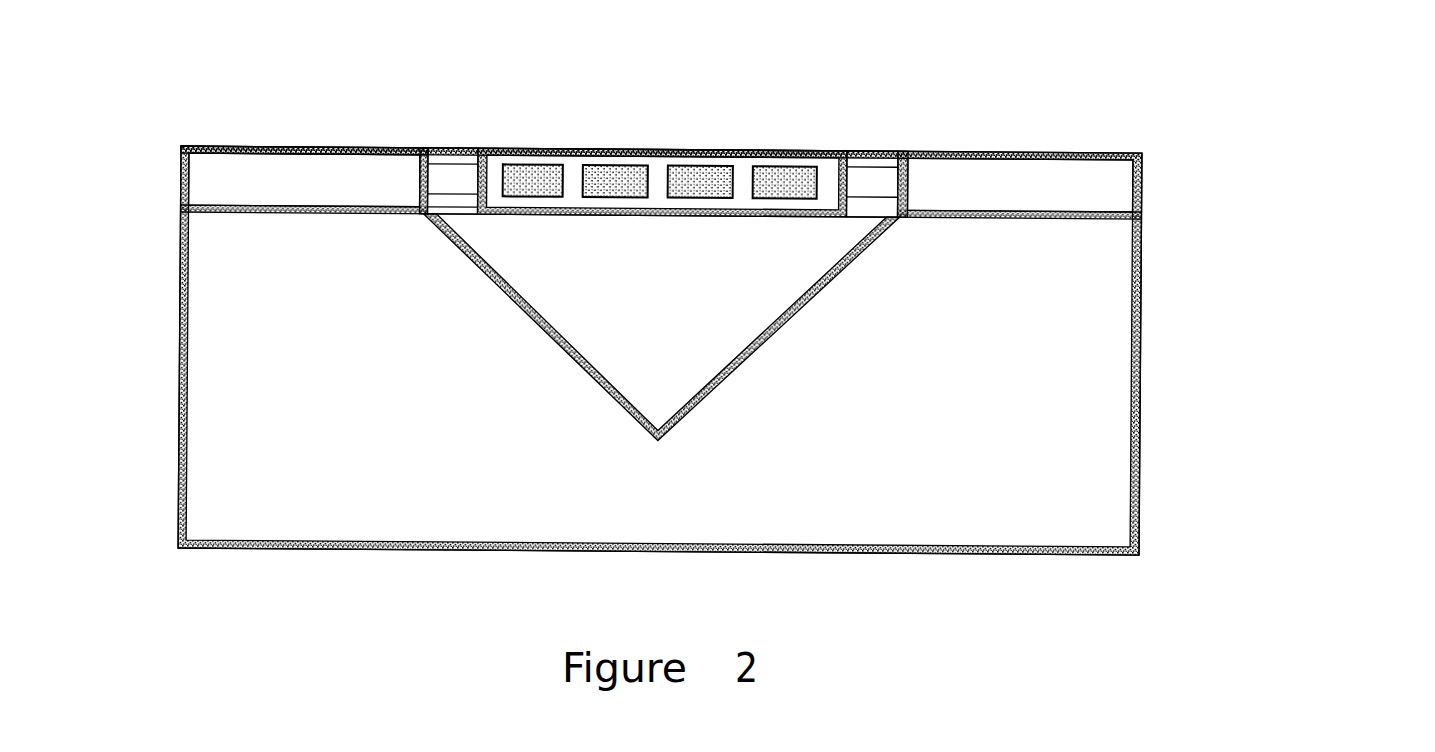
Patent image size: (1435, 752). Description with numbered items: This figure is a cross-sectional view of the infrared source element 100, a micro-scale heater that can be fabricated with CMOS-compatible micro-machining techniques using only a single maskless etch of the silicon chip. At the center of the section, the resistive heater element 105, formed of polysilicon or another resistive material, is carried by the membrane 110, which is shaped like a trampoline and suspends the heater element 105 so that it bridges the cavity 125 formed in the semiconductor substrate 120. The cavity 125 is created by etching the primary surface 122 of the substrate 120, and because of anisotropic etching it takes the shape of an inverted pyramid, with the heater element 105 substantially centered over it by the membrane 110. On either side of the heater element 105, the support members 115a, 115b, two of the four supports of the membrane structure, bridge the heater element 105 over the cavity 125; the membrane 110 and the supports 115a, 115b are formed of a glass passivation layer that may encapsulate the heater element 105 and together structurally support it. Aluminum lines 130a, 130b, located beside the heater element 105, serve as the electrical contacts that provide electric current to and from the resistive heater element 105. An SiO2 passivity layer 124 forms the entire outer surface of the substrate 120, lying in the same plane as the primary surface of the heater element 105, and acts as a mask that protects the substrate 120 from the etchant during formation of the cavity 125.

The infrared source element 100 is at (1220, 311).
The resistive heater element 105 is at (617, 163).
The membrane 110 is at (737, 147).
The support member 115a is at (430, 147).
The support member 115b is at (893, 147).
The semiconductor substrate 120 is at (1138, 412).
The primary surface 122 is at (231, 147).
The SiO2 passivity layer 124 is at (333, 182).
The cavity 125 is at (523, 250).
The aluminum line 130a is at (462, 162).
The aluminum line 130b is at (857, 162).